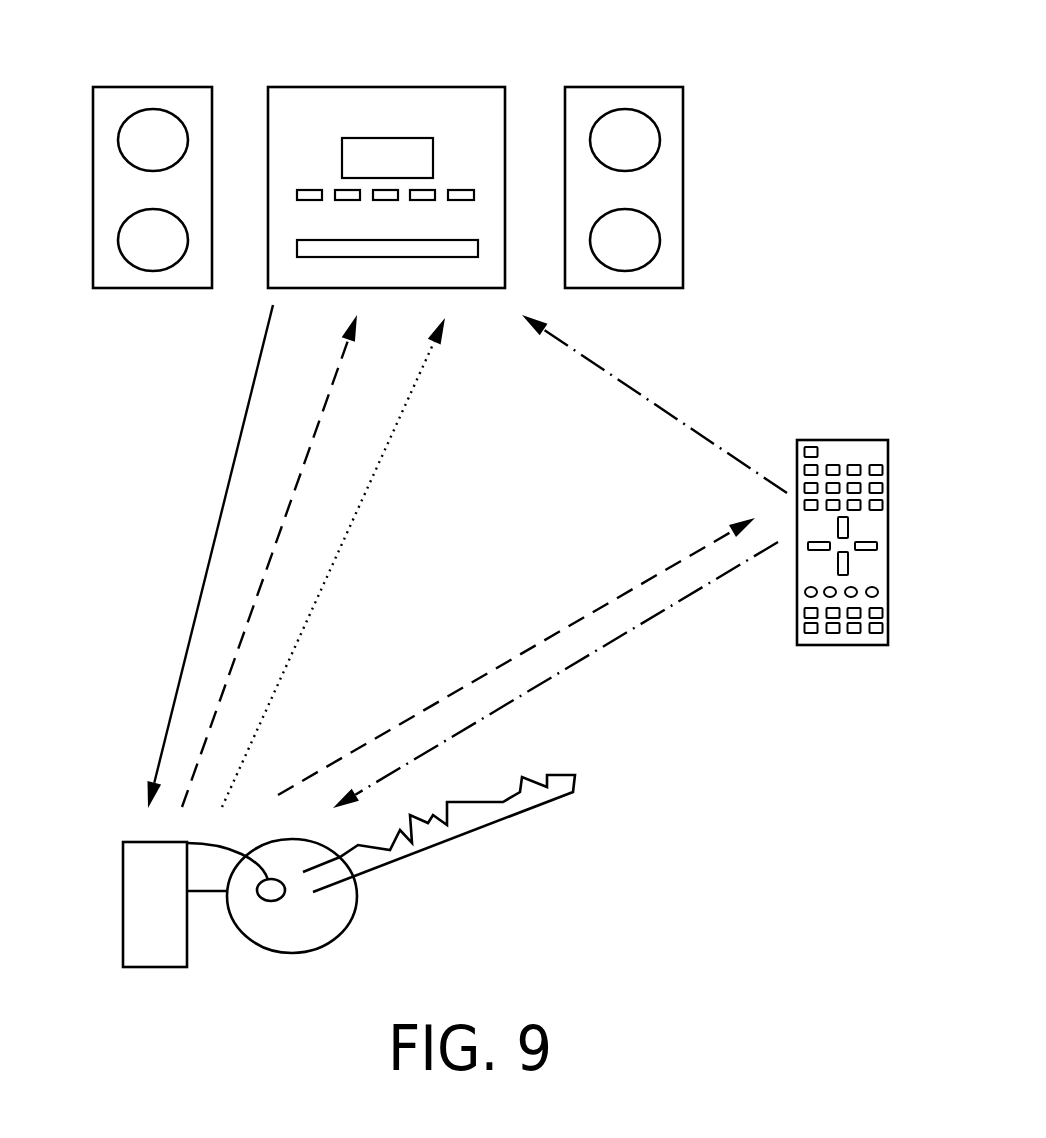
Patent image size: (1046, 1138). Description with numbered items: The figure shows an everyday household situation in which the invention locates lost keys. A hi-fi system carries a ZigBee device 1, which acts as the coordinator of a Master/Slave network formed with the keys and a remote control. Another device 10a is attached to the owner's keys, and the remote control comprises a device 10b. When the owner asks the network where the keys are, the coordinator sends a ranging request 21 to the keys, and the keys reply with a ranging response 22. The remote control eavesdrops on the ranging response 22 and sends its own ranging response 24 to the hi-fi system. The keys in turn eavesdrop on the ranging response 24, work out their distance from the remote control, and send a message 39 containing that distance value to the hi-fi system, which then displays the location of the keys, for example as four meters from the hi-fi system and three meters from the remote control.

The ZigBee device 1 is at (385, 86).
The device 10a is at (130, 895).
The device 10b is at (878, 452).
The ranging request 21 is at (207, 541).
The ranging response 22 is at (323, 408).
The ranging response 24 is at (683, 423).
The message 39 is at (370, 480).